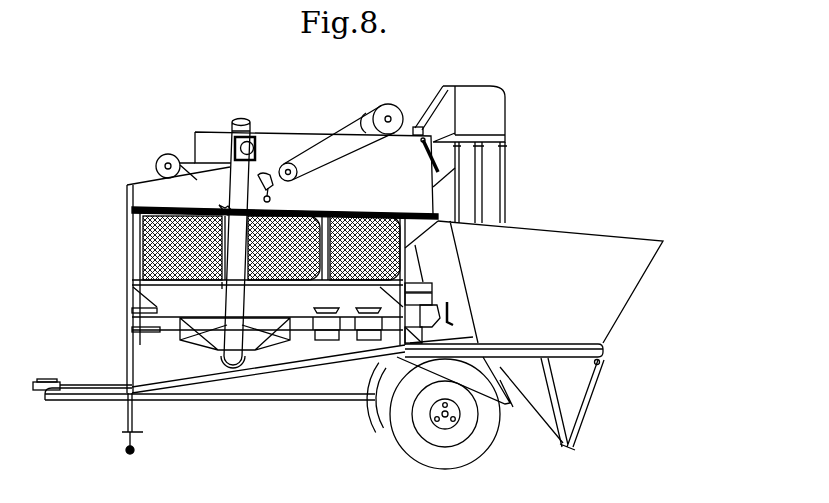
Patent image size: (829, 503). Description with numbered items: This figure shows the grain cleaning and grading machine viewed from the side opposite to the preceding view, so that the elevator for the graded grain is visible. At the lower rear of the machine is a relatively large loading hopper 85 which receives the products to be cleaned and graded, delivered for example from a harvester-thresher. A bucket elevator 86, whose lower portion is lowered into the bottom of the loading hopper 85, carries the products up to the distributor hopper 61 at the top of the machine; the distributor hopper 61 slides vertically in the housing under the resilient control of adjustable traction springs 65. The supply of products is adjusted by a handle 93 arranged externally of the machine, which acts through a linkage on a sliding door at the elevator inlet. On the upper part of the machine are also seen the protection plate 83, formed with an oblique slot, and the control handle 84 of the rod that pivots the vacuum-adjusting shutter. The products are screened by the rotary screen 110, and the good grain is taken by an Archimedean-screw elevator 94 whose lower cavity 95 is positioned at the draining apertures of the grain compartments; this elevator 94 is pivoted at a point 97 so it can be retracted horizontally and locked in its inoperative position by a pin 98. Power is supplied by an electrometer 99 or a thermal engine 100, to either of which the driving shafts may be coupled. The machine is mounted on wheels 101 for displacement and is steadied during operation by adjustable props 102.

The distributor hopper 61 is at (428, 183).
The traction springs 65 is at (428, 159).
The protection plate 83 is at (265, 175).
The control handle 84 is at (271, 199).
The loading hopper 85 is at (550, 282).
The bucket elevator 86 is at (497, 193).
The handle 93 is at (455, 311).
The elevator 94 is at (243, 301).
The cavity 95 is at (193, 346).
The pivot point 97 is at (221, 287).
The pin 98 is at (222, 205).
The electrometer 99 is at (168, 154).
The thermal engine 100 is at (432, 305).
The wheels 101 is at (415, 440).
The adjustable props 102 is at (133, 419).
The rotary screen 110 is at (143, 257).